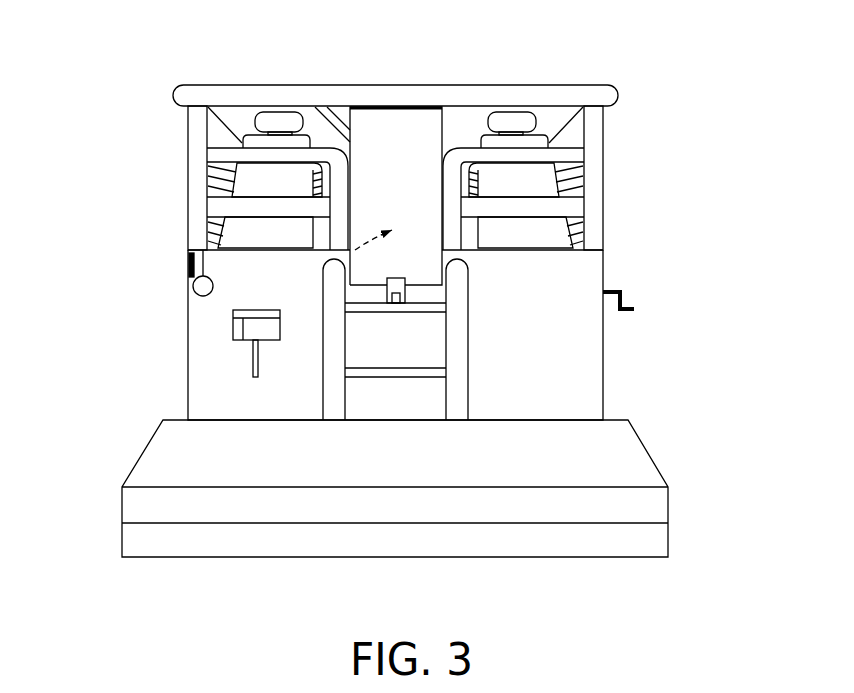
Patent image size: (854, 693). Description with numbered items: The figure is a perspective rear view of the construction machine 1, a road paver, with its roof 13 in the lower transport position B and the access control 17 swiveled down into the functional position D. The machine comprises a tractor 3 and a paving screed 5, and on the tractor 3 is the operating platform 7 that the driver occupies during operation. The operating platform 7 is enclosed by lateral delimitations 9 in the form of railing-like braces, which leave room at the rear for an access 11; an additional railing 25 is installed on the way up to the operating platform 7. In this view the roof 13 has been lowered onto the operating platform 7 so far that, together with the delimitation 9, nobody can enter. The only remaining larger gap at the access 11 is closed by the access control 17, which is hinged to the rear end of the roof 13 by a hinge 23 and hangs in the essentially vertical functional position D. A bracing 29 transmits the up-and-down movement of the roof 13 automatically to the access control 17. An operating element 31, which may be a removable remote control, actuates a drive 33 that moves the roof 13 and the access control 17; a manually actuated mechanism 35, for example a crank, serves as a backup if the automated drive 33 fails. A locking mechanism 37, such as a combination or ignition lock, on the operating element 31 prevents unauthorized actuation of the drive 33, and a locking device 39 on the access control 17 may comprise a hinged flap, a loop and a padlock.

The construction machine 1 is at (95, 65).
The tractor 3 is at (615, 330).
The paving screed 5 is at (685, 527).
The operating platform 7 is at (474, 137).
The lateral delimitations 9 is at (263, 168).
The access 11 is at (352, 251).
The roof 13 is at (507, 84).
The access control 17 is at (415, 177).
The hinge 23 is at (403, 105).
The additional railing 25 is at (470, 342).
The bracing 29 is at (338, 105).
The operating element 31 is at (264, 356).
The drive 33 is at (215, 275).
The manually actuated mechanism 35 is at (632, 298).
The locking mechanism 37 is at (232, 344).
The locking device 39 is at (383, 296).
The lower transport position B is at (628, 100).
The functional position D is at (449, 280).